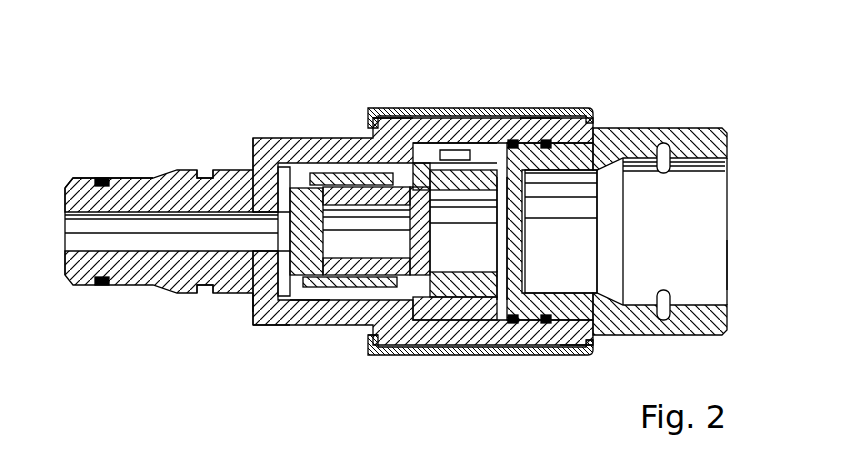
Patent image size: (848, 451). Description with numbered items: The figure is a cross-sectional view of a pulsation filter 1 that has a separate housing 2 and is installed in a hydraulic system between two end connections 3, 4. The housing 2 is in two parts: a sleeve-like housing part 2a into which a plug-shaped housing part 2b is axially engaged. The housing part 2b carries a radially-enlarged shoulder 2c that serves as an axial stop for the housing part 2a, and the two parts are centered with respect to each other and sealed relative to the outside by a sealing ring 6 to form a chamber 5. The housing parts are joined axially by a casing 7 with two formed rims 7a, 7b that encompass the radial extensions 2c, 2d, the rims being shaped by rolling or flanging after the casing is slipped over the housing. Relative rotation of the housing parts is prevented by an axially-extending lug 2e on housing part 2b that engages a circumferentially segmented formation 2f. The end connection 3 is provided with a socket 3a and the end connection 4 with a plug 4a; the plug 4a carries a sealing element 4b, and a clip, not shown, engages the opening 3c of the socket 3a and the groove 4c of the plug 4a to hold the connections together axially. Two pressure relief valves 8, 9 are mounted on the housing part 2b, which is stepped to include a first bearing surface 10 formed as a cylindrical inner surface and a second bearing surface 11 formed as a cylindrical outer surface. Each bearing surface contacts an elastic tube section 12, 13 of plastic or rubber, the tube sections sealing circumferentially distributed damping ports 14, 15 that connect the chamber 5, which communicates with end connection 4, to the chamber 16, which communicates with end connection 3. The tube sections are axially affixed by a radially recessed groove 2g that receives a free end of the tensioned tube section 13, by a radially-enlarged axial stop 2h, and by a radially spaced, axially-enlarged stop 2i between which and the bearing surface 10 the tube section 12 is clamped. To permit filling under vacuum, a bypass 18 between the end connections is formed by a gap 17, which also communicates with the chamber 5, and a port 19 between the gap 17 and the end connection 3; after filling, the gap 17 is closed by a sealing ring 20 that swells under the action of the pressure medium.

The pulsation filter 1 is at (200, 66).
The housing 2 is at (640, 124).
The sleeve-like housing part 2a is at (258, 137).
The plug-shaped housing part 2b is at (713, 128).
The radially-enlarged shoulder 2c is at (571, 353).
The radial extension 2d is at (385, 127).
The axially-extending lug 2e is at (262, 327).
The circumferentially segmented formation 2f is at (251, 304).
The radially recessed groove 2g is at (385, 262).
The radially-enlarged axial stop 2h is at (301, 300).
The axially-enlarged stop 2i is at (437, 161).
The end connection 3 is at (671, 261).
The socket 3a is at (731, 262).
The opening 3c is at (673, 127).
The end connection 4 is at (125, 242).
The plug 4a is at (119, 166).
The sealing element 4b is at (102, 292).
The groove 4c is at (203, 168).
The chamber 5 is at (287, 180).
The sealing ring 6 is at (560, 140).
The casing 7 is at (402, 354).
The formed rim 7a is at (366, 345).
The formed rim 7b is at (600, 344).
The pressure relief valve 8 is at (456, 145).
The pressure relief valve 9 is at (314, 169).
The first bearing surface 10 is at (448, 292).
The second bearing surface 11 is at (362, 168).
The tube section 12 is at (478, 164).
The tube section 13 is at (332, 290).
The port 14 is at (474, 171).
The port 15 is at (335, 185).
The chamber 16 is at (448, 253).
The gap 17 is at (513, 139).
The bypass 18 is at (541, 116).
The port 19 is at (545, 139).
The sealing ring 20 is at (525, 185).